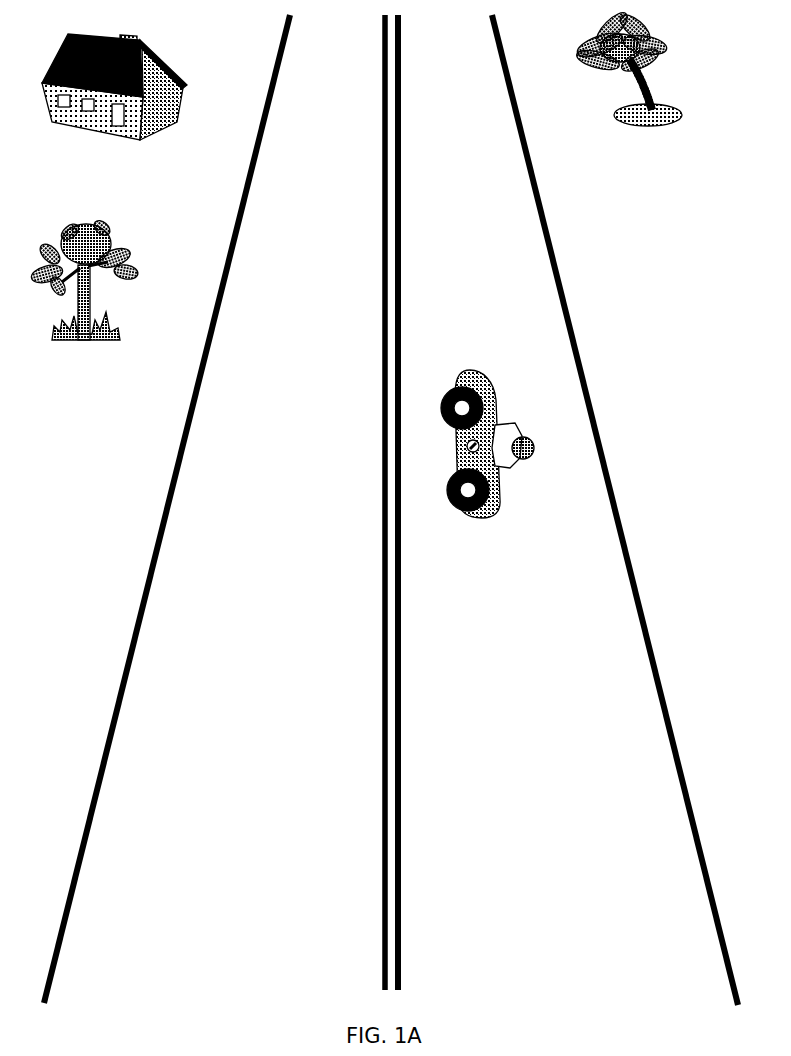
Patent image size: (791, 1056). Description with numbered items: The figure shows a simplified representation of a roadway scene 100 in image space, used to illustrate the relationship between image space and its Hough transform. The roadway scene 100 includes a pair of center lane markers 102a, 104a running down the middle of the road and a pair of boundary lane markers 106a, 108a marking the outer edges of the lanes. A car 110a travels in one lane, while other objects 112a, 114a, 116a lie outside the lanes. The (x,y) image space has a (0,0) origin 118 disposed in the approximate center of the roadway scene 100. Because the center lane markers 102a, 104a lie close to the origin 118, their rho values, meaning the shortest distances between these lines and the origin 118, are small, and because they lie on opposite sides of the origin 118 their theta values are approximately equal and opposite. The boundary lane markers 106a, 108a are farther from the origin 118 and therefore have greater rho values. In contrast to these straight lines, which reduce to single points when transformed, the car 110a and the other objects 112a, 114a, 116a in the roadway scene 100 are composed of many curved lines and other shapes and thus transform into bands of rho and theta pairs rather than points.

The roadway scene 100 is at (662, 263).
The center lane marker 102a is at (382, 742).
The center lane marker 104a is at (402, 728).
The boundary lane marker 106a is at (107, 768).
The boundary lane marker 108a is at (683, 802).
The car 110a is at (477, 365).
The other object 112a is at (83, 342).
The other object 114a is at (155, 132).
The other object 116a is at (650, 72).
The origin 118 is at (392, 605).